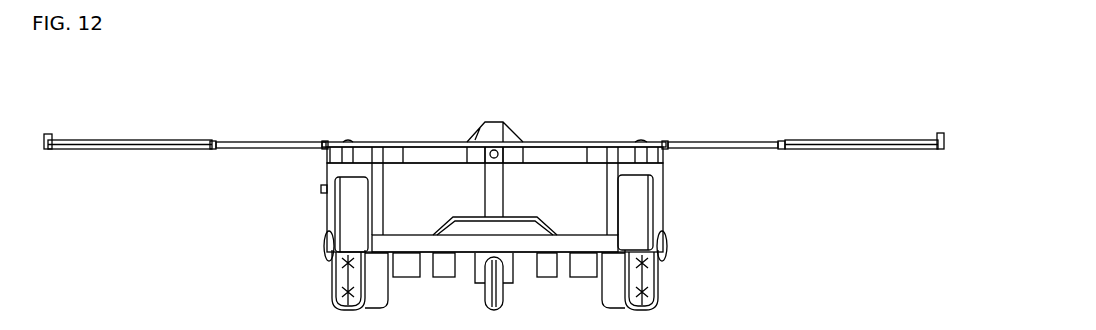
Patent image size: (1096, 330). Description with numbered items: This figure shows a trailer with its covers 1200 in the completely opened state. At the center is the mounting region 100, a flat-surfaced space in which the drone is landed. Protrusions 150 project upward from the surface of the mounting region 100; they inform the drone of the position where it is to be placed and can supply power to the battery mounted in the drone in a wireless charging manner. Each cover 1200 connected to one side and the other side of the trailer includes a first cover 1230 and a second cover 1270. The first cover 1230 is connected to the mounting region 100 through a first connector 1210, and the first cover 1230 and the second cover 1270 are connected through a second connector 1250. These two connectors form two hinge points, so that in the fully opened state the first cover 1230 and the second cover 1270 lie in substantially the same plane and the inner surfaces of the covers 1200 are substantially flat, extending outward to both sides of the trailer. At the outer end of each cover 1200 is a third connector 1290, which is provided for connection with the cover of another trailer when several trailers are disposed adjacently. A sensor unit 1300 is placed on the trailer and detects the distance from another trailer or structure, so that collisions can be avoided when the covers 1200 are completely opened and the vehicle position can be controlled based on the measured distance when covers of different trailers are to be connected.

The mounting region 100 is at (567, 140).
The protrusion 150 is at (487, 125).
The cover 1200 is at (488, 159).
The first connector 1210 is at (330, 141).
The first cover 1230 is at (255, 142).
The second connector 1250 is at (213, 141).
The second cover 1270 is at (143, 140).
The third connector 1290 is at (50, 135).
The sensor unit 1300 is at (321, 190).